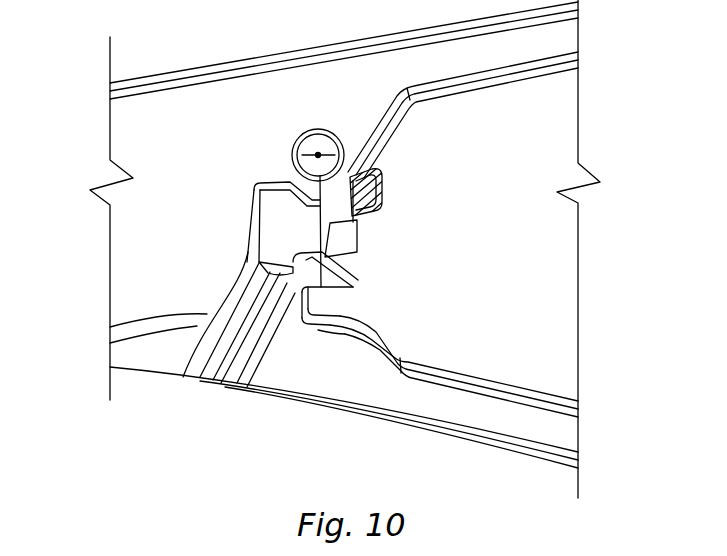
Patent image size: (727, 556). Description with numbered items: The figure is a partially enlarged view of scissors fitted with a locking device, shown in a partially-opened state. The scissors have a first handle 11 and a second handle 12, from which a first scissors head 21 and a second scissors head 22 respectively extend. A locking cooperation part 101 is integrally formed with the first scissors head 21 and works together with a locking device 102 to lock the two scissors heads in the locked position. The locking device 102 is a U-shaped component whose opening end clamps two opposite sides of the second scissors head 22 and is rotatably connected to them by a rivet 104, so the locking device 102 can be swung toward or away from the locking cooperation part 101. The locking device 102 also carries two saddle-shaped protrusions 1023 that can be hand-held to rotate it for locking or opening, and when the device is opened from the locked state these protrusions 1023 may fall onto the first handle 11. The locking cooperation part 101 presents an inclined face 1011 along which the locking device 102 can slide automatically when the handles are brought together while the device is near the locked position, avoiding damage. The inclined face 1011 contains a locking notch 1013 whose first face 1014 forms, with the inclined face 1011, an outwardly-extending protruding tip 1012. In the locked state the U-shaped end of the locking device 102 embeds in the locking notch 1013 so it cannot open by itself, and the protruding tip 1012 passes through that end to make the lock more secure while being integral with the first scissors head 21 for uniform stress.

The first handle 11 is at (500, 413).
The second handle 12 is at (463, 60).
The first scissors head 21 is at (277, 360).
The second scissors head 22 is at (177, 242).
The locking cooperation part 101 is at (330, 340).
The locking device 102 is at (337, 212).
The rivet 104 is at (310, 143).
The inclined face 1011 is at (355, 272).
The protruding tip 1012 is at (350, 290).
The locking notch 1013 is at (332, 313).
The first face 1014 is at (333, 302).
The protrusion 1023 is at (380, 173).